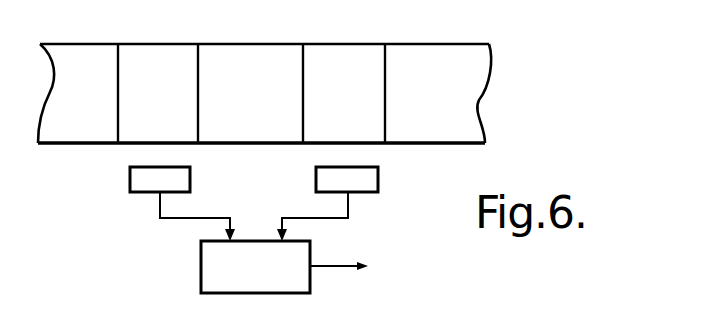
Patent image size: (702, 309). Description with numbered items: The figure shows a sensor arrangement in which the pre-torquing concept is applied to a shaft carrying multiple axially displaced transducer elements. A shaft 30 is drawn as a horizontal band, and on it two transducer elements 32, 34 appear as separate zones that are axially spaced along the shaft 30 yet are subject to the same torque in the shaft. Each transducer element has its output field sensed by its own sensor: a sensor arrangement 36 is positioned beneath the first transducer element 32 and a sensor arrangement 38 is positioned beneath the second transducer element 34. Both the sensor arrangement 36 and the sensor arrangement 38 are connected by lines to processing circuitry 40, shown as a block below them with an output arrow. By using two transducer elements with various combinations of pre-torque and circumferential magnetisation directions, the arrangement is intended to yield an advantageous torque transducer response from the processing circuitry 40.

The shaft 30 is at (450, 52).
The transducer element 32 is at (172, 48).
The transducer element 34 is at (355, 50).
The sensor arrangement 36 is at (132, 180).
The sensor arrangement 38 is at (365, 180).
The processing circuitry 40 is at (205, 262).